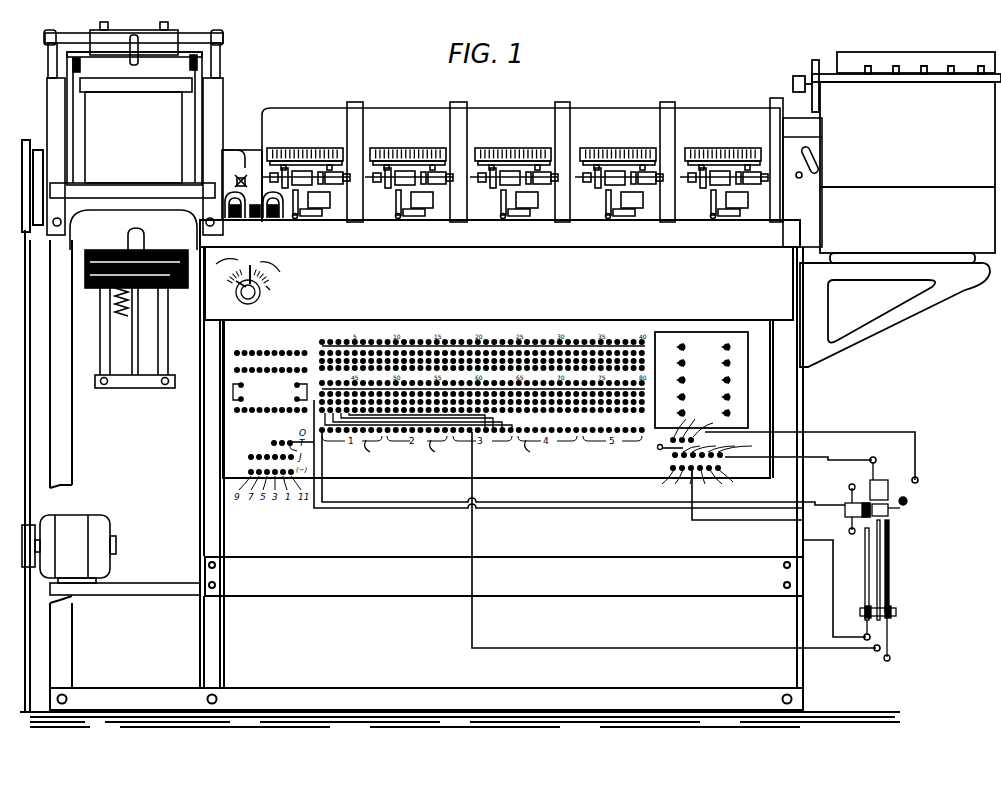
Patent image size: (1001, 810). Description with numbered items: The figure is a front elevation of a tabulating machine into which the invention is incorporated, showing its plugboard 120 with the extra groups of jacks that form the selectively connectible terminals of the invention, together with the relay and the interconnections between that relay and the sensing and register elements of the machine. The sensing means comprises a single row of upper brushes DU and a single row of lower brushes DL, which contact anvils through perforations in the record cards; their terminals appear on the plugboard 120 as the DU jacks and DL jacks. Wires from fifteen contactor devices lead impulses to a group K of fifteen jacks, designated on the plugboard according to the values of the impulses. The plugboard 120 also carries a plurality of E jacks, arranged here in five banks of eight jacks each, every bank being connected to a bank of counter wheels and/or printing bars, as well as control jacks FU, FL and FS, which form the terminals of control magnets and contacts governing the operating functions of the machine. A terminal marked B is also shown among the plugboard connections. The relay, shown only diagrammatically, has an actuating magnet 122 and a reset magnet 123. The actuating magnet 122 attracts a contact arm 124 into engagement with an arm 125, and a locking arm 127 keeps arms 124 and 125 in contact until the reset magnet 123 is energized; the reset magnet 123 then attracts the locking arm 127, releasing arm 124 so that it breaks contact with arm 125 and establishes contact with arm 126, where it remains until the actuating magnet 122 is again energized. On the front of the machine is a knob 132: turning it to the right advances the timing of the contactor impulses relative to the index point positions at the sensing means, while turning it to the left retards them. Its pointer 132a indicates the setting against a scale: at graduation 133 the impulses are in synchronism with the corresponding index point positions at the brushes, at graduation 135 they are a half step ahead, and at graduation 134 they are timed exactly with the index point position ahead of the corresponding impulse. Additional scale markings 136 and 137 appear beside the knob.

The plugboard 120 is at (334, 478).
The actuating magnet 122 is at (842, 509).
The reset magnet 123 is at (890, 488).
The contact arm 124 is at (880, 559).
The arm 125 is at (866, 571).
The arm 126 is at (890, 542).
The locking arm 127 is at (904, 505).
The knob 132 is at (252, 299).
The pointer 132a is at (242, 298).
The graduation 133 is at (250, 265).
The graduation 134 is at (270, 291).
The graduation 135 is at (234, 286).
The advance scale 136 is at (275, 283).
The retard scale 137 is at (233, 272).
The upper brushes DU is at (297, 386).
The lower brushes DL is at (320, 412).
The control jacks FU is at (235, 353).
The control jacks FS is at (232, 384).
The control jacks FL is at (236, 410).
The E jacks E is at (451, 452).
The group of jacks K is at (699, 449).
The battery terminal B is at (702, 440).